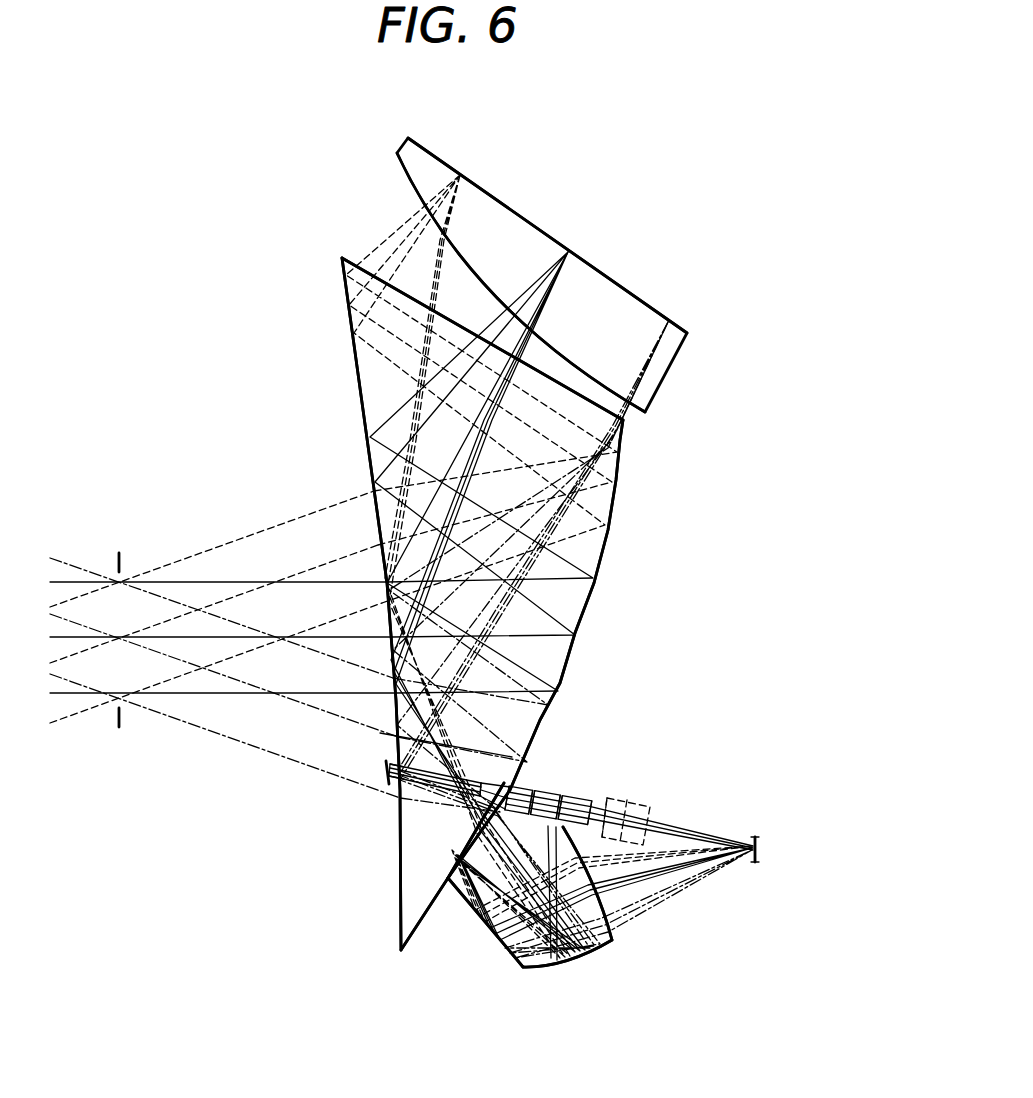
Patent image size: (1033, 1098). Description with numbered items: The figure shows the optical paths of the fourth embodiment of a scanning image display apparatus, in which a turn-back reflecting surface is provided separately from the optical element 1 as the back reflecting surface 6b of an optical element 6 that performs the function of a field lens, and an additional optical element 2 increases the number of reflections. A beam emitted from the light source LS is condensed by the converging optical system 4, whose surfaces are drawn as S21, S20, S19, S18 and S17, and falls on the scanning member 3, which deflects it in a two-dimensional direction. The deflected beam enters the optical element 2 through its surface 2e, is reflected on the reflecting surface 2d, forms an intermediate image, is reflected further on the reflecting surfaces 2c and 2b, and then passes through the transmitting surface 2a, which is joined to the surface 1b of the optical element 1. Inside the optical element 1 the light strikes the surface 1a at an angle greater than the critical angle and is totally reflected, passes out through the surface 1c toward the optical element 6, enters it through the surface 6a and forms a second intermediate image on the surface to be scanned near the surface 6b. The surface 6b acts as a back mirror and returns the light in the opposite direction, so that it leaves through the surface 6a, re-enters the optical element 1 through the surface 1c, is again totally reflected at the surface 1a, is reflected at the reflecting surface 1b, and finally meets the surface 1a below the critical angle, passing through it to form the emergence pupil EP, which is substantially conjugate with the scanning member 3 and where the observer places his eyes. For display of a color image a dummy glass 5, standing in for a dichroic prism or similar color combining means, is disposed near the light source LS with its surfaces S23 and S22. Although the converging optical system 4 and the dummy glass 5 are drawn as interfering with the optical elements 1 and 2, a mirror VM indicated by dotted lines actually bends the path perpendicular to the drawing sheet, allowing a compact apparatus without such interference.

The optical element 1 is at (330, 268).
The surface 1a is at (358, 381).
The surface 1b is at (612, 512).
The surface 1c is at (350, 260).
The optical element 2 is at (486, 952).
The transmitting surface 2a is at (486, 840).
The reflecting surface 2b is at (577, 962).
The reflecting surface 2c is at (488, 830).
The reflecting surface 2d is at (482, 910).
The surface 2e is at (612, 928).
The scanning member 3 is at (760, 849).
The converging optical system 4 is at (642, 655).
The dummy glass 5 is at (366, 815).
The optical element 6 is at (600, 287).
The surface 6a is at (397, 170).
The reflecting surface 6b is at (513, 207).
The emergence pupil EP is at (119, 553).
The light source LS is at (388, 773).
The mirror VM is at (655, 820).
The surface S17 is at (624, 803).
The surface S18 is at (581, 800).
The surface S19 is at (567, 797).
The surface S20 is at (535, 790).
The surface S21 is at (513, 775).
The surface S22 is at (492, 818).
The surface S23 is at (387, 780).